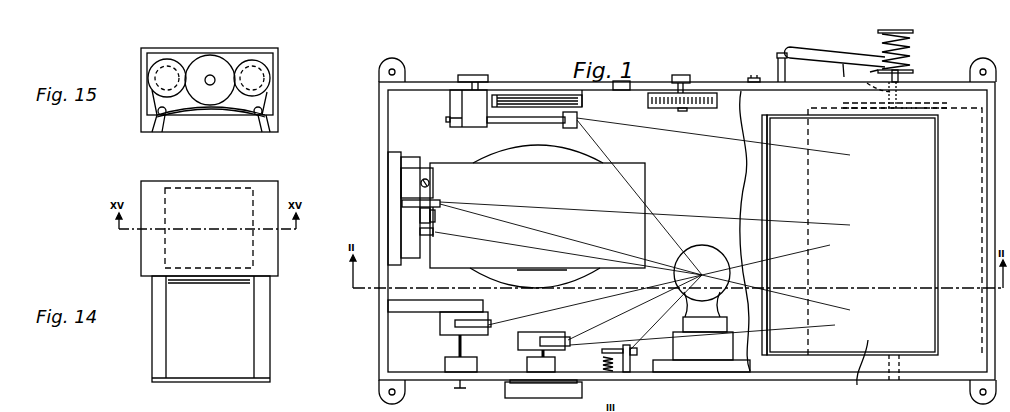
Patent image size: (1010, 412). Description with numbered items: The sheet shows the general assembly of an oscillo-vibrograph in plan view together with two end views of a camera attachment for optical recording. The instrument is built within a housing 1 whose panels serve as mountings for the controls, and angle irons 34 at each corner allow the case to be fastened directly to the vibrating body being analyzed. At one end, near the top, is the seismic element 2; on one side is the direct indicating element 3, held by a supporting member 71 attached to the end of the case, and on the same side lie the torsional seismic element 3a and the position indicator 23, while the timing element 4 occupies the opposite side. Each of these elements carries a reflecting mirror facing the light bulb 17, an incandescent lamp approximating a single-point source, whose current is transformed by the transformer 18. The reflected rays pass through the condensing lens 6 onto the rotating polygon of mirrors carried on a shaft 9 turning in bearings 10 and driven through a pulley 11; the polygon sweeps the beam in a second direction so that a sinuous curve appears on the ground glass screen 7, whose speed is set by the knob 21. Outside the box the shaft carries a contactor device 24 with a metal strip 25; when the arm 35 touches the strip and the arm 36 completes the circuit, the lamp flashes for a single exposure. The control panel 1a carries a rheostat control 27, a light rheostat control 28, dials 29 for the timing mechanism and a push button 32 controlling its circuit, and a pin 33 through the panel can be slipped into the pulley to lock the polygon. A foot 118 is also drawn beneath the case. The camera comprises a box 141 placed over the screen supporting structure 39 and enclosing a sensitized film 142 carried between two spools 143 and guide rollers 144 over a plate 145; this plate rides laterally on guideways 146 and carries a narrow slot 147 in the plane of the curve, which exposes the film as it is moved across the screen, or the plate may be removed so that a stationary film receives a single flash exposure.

In FIG. 1, the housing 1 is at (382, 168).
In FIG. 1, the control panel 1a is at (519, 89).
In FIG. 1, the seismic element 2 is at (413, 155).
In FIG. 1, the direct indicating element 3 is at (445, 330).
In FIG. 1, the torsional seismic element 3a is at (520, 342).
In FIG. 1, the timing element 4 is at (473, 120).
In FIG. 1, the condensing lens 6 is at (761, 123).
In FIG. 1, the ground glass screen 7 is at (859, 368).
In FIG. 1, the shaft 9 is at (903, 101).
In FIG. 1, the bearings 10 is at (902, 92).
In FIG. 1, the pulley 11 is at (944, 109).
In FIG. 1, the light bulb 17 is at (716, 262).
In FIG. 1, the transformer 18 is at (640, 170).
In FIG. 1, the knob 21 is at (948, 86).
In FIG. 1, the position indicator 23 is at (626, 346).
In FIG. 1, the contactor device 24 is at (914, 38).
In FIG. 1, the metal strip 25 is at (880, 52).
In FIG. 1, the rheostat control 27 is at (756, 74).
In FIG. 1, the light rheostat control 28 is at (683, 75).
In FIG. 1, the dials 29 is at (484, 76).
In FIG. 1, the push button 32 is at (628, 79).
In FIG. 1, the pin 33 is at (866, 66).
In FIG. 1, the angle irons 34 is at (395, 66).
In FIG. 1, the arm 35 is at (826, 47).
In FIG. 1, the arm 36 is at (833, 70).
In FIG. 1, the ground glass screen supporting structure 39 is at (940, 317).
In FIG. 1, the supporting member 71 is at (397, 303).
In FIG. 1, the foot 118 is at (580, 391).
In FIG. 15, the box 141 is at (228, 32).
In FIG. 14, the box 141 is at (261, 185).
In FIG. 15, the film 142 is at (150, 98).
In FIG. 15, the spools 143 is at (152, 66).
In FIG. 15, the guide rollers 144 is at (158, 115).
In FIG. 15, the plate 145 is at (210, 108).
In FIG. 14, the plate 145 is at (262, 309).
In FIG. 15, the guideways 146 is at (163, 118).
In FIG. 14, the slot 147 is at (194, 282).